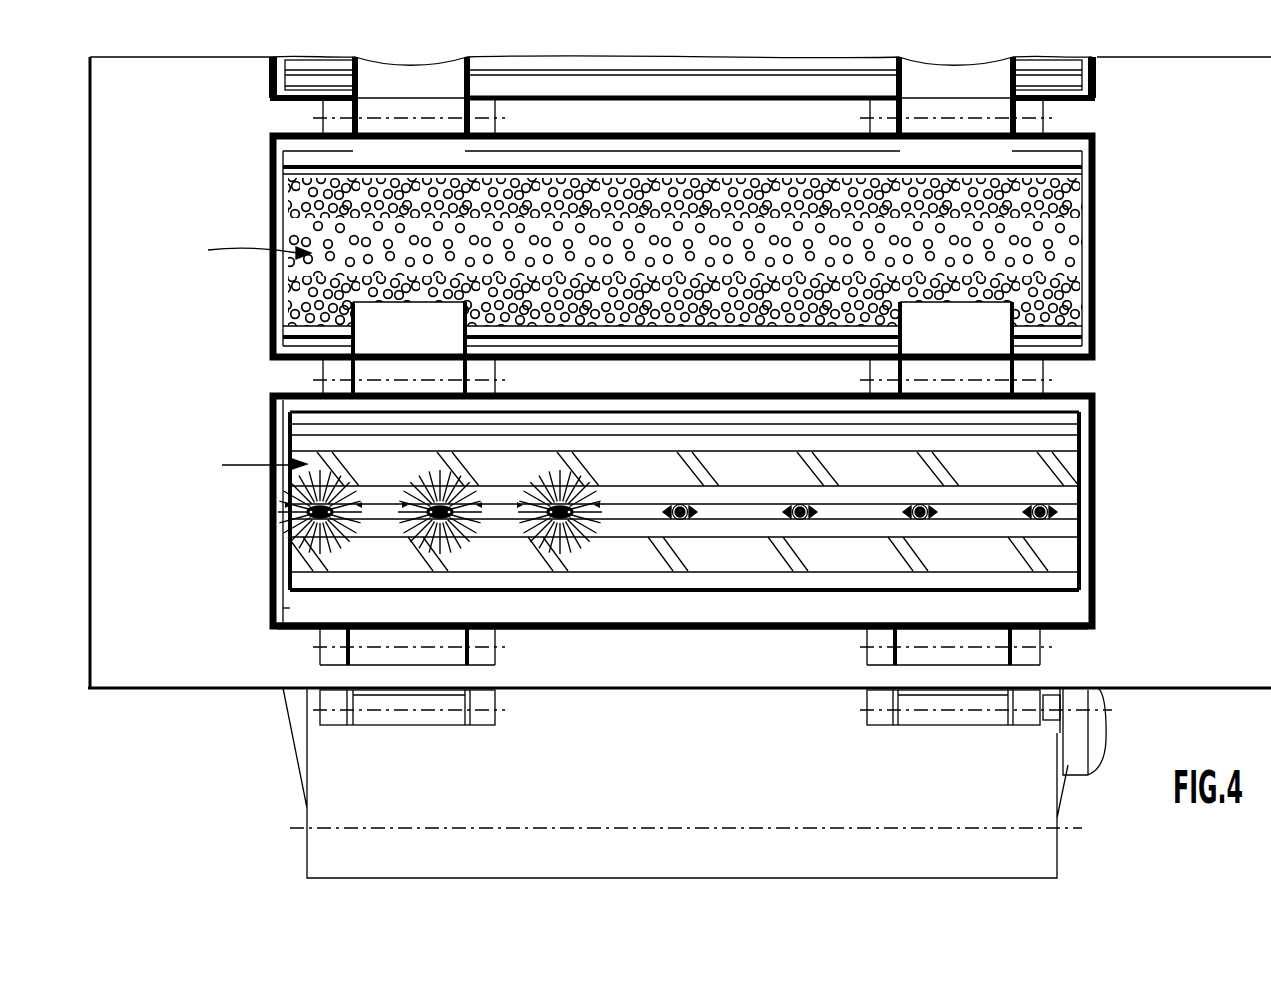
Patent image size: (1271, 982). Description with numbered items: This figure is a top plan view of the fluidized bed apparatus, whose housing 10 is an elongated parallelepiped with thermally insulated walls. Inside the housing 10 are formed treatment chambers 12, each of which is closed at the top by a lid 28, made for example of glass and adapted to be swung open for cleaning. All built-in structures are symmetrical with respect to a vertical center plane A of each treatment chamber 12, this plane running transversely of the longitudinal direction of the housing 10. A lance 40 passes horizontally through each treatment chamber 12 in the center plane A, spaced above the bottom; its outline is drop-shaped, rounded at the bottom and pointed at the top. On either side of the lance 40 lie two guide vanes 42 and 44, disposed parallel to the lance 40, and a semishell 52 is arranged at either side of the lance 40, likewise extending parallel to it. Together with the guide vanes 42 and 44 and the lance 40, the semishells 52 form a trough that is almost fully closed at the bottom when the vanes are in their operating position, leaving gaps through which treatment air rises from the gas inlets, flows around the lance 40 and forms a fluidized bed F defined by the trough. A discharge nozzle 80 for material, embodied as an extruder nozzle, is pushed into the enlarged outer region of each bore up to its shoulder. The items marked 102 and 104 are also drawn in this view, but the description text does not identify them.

The housing 10 is at (130, 696).
The treatment chamber 12 is at (244, 360).
The fluidized bed F is at (1035, 252).
The vertical center plane A is at (305, 512).
The lid 28 is at (290, 610).
The lance 40 is at (1067, 508).
The guide vane 42 is at (1067, 527).
The guide vane 44 is at (1065, 550).
The semishell 52 is at (1065, 580).
The discharge nozzle 80 is at (780, 519).
The passage openings 102 is at (900, 547).
The nozzle 104 is at (1020, 519).